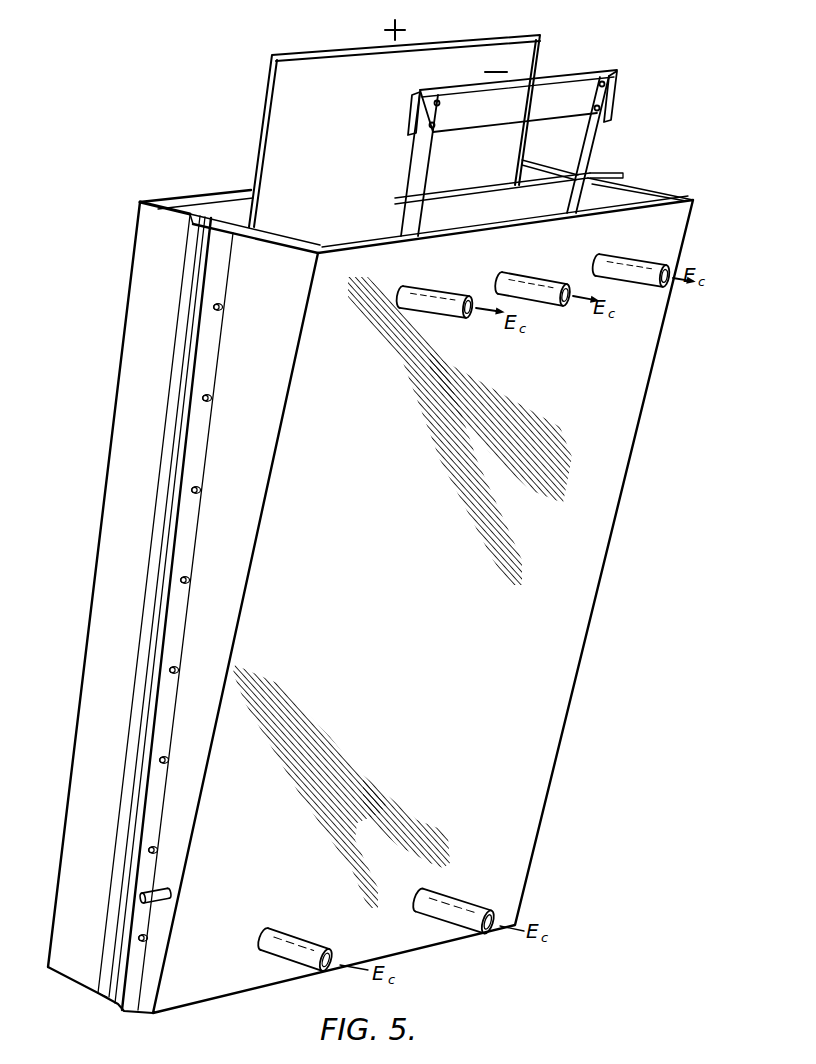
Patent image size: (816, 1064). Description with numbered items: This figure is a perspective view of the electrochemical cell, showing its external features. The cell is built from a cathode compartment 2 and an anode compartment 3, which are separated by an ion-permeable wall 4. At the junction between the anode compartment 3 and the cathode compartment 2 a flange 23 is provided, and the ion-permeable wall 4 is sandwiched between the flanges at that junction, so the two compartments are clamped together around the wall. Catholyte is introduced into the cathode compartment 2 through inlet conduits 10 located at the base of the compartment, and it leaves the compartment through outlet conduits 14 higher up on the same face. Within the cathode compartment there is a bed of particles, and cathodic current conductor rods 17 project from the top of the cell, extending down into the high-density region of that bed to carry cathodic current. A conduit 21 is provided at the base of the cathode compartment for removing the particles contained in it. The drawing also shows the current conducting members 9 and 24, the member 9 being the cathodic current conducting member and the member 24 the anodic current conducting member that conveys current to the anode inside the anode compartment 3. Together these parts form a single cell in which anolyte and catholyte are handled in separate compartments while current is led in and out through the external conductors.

The cathode compartment 2 is at (341, 398).
The anode compartment 3 is at (127, 388).
The ion-permeable wall 4 is at (172, 470).
The current conductor member 9 is at (277, 126).
The inlet conduits 10 is at (264, 938).
The outlet conduits 14 is at (463, 318).
The cathodic current conductor rods 17 is at (417, 153).
The conduit 21 is at (160, 888).
The flange 23 is at (107, 995).
The anodic current conducting member 24 is at (488, 106).